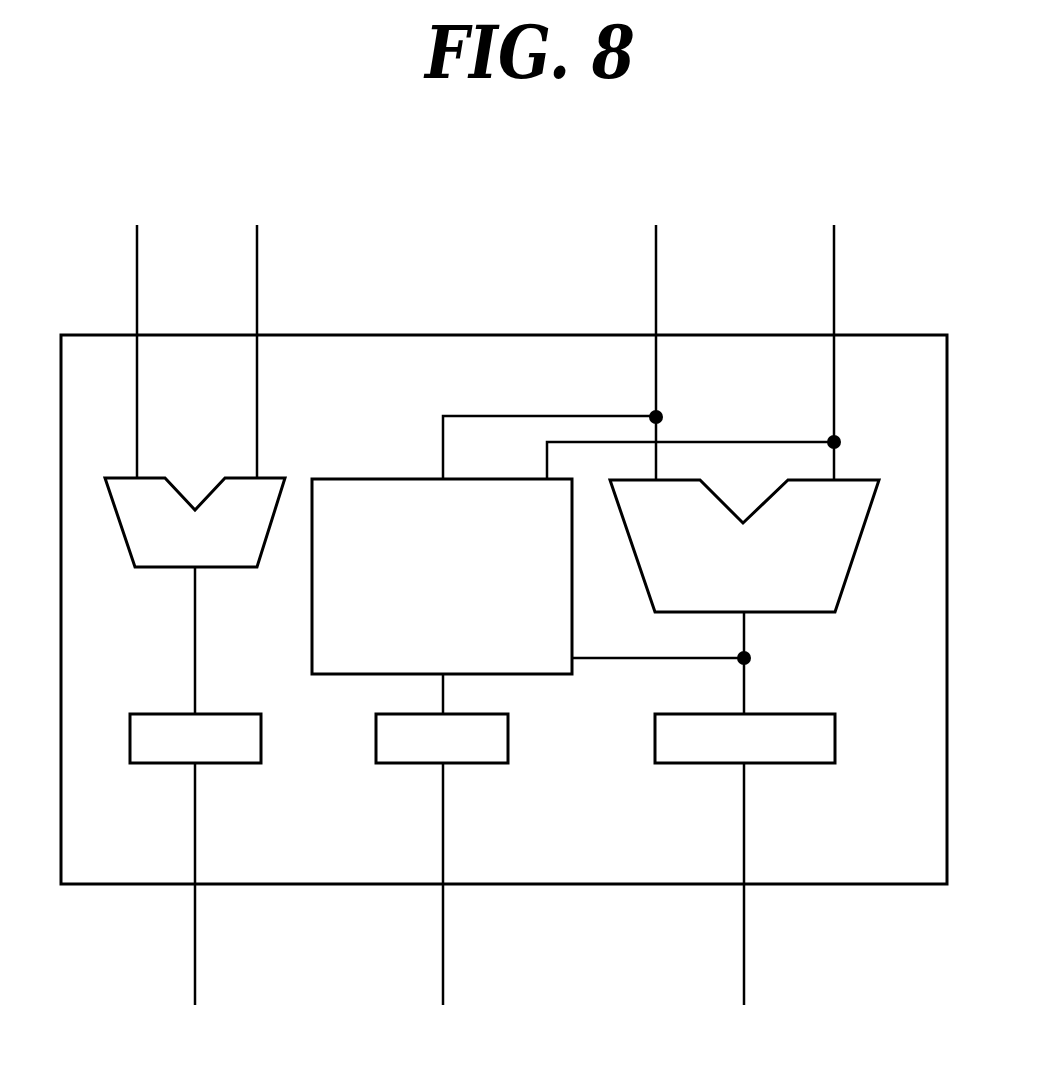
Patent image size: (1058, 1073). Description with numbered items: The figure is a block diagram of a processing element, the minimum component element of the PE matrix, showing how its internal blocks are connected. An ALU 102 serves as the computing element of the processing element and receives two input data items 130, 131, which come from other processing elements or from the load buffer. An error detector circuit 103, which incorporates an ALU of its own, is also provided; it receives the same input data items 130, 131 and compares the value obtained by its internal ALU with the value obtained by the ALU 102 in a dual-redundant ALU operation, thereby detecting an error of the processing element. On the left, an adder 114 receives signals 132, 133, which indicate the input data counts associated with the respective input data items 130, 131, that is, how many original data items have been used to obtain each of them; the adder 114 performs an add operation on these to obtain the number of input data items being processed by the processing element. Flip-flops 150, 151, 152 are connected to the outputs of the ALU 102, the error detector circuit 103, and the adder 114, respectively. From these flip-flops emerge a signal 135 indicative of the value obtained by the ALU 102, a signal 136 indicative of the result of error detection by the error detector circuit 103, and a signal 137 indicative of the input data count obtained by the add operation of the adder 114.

The ALU 102 is at (823, 612).
The error detector circuit 103 is at (312, 578).
The adder 114 is at (160, 568).
The input data item 130 is at (834, 284).
The input data item 131 is at (656, 284).
The signal 132 is at (257, 284).
The signal 133 is at (137, 284).
The signal 135 is at (744, 956).
The signal 136 is at (443, 956).
The signal 137 is at (195, 956).
The flip-flop 150 is at (152, 884).
The flip-flop 151 is at (404, 762).
The flip-flop 152 is at (170, 762).